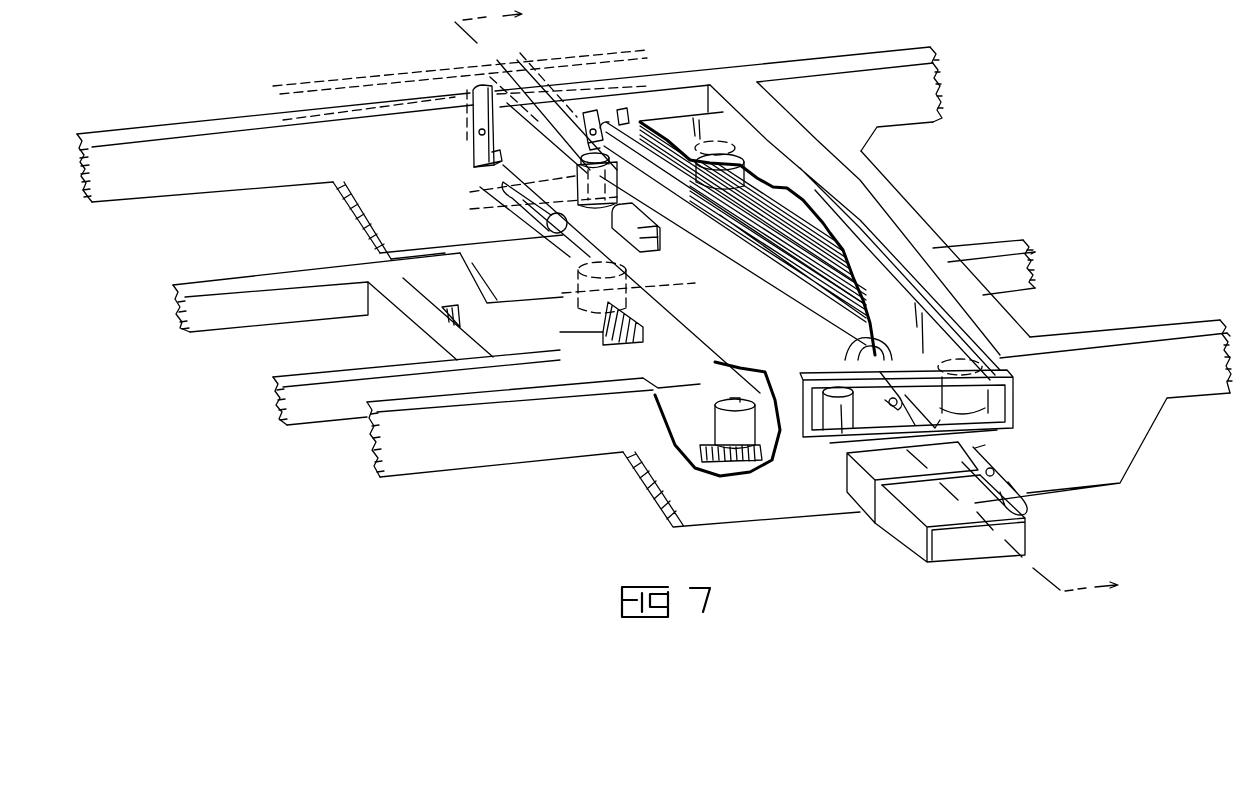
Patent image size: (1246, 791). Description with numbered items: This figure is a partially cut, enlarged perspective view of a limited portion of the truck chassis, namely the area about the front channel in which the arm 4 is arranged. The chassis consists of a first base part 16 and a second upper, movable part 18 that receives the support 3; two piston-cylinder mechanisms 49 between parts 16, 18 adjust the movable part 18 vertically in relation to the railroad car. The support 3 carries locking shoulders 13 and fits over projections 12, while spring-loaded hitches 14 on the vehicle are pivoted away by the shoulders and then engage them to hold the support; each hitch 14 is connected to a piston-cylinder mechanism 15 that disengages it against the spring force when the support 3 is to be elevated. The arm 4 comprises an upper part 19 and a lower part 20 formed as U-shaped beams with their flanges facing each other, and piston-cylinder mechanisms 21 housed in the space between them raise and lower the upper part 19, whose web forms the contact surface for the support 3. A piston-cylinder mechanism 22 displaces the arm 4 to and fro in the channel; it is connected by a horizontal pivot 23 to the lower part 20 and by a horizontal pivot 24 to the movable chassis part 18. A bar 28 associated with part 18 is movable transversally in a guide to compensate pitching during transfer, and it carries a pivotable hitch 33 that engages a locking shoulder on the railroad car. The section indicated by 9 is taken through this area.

The support 3 is at (408, 64).
The arm 4 is at (878, 290).
The section line 9- 9 is at (793, 299).
The projection 12 is at (620, 227).
The locking shoulder 13 is at (470, 108).
The hitch 14 is at (472, 128).
The piston-cylinder mechanism 15 is at (503, 195).
The first base part 16 is at (287, 270).
The second upper movable part 18 is at (240, 115).
The upper part of arm 19 is at (1013, 382).
The lower part of arm 20 is at (1013, 418).
The piston-cylinder mechanism 21 is at (722, 178).
The piston-cylinder mechanism 22 is at (846, 222).
The horizontal pivot 23 is at (880, 395).
The horizontal pivot 24 is at (588, 134).
The bar 28 is at (878, 531).
The pivotable hitch 33 is at (1012, 488).
The piston-cylinder mechanism 49 is at (565, 272).